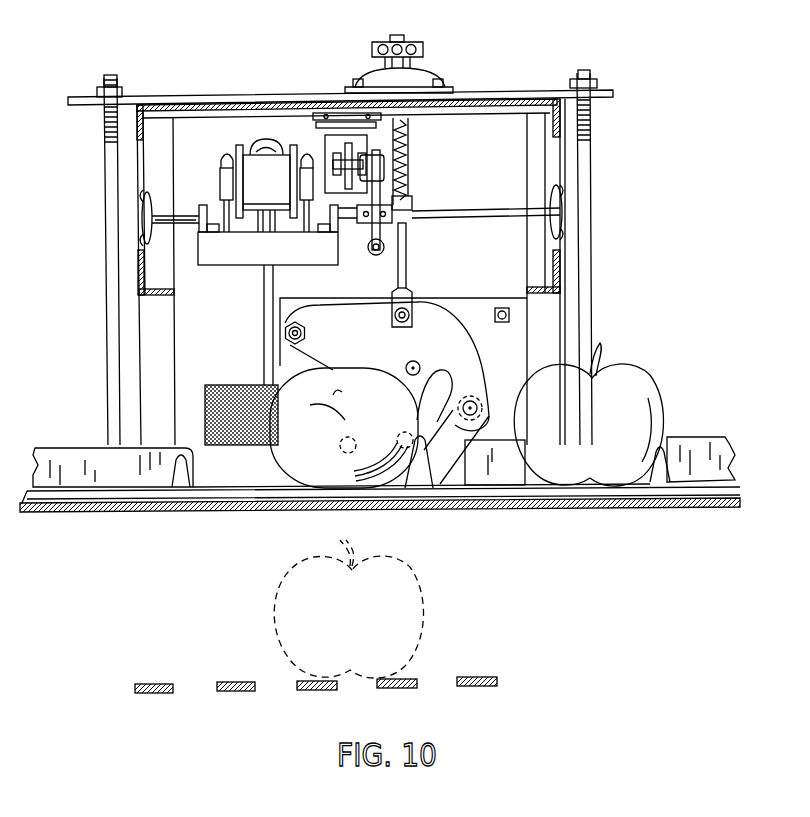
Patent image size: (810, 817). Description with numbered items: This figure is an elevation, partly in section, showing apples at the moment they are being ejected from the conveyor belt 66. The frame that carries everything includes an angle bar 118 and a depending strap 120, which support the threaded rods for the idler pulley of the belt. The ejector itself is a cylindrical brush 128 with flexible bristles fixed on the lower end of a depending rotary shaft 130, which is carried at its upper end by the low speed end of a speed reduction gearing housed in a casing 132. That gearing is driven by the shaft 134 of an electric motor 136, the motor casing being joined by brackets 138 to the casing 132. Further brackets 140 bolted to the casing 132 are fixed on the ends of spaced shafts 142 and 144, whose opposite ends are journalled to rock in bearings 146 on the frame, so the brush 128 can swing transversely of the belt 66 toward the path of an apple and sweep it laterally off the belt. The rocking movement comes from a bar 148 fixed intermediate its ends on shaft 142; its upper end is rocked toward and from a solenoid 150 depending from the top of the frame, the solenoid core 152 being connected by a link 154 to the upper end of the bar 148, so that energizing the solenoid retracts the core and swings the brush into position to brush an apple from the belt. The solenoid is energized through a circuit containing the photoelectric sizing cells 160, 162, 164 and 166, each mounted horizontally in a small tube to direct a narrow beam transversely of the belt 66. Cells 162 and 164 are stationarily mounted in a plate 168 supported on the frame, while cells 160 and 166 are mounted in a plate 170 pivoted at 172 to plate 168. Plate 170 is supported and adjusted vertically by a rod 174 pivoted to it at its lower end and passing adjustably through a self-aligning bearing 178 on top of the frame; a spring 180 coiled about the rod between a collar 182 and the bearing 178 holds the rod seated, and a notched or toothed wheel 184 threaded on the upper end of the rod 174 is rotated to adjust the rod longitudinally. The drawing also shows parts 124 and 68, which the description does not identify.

The notched or toothed wheel 184 is at (410, 45).
The self-aligning bearing 178 is at (418, 83).
The angle bar 118 is at (340, 87).
The strap 120 is at (203, 80).
The electric motor 136 is at (260, 141).
The brackets 138 is at (227, 220).
The shaft 144 is at (178, 215).
The bearings 146 is at (147, 220).
The brackets 140 is at (203, 235).
The shaft 134 is at (267, 225).
The casing 132 is at (282, 258).
The solenoid 150 is at (358, 138).
The solenoid core 152 is at (372, 150).
The bar 148 is at (400, 172).
The spring 180 is at (409, 192).
The collar 182 is at (400, 213).
The shaft 142 is at (497, 215).
The rod 174 is at (404, 254).
The plate 170 is at (426, 310).
The plate 168 is at (487, 306).
The rotary shaft 130 is at (266, 318).
The cylindrical brush 128 is at (230, 385).
The pivot 172 is at (302, 333).
The photoelectric cell 160 is at (415, 362).
The photoelectric cell 166 is at (478, 401).
The photoelectric cell 164 is at (402, 435).
The photoelectric cell 162 is at (340, 447).
The block 124 is at (69, 455).
The stop 68 is at (665, 458).
The belt 66 is at (640, 492).
The link 154 is at (218, 682).